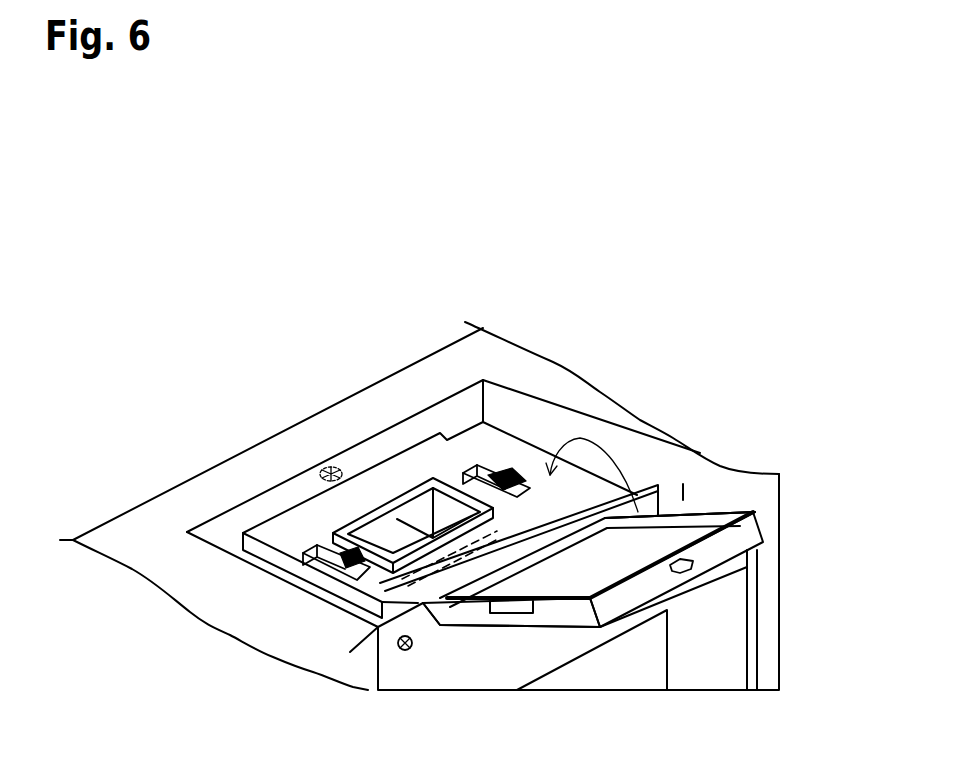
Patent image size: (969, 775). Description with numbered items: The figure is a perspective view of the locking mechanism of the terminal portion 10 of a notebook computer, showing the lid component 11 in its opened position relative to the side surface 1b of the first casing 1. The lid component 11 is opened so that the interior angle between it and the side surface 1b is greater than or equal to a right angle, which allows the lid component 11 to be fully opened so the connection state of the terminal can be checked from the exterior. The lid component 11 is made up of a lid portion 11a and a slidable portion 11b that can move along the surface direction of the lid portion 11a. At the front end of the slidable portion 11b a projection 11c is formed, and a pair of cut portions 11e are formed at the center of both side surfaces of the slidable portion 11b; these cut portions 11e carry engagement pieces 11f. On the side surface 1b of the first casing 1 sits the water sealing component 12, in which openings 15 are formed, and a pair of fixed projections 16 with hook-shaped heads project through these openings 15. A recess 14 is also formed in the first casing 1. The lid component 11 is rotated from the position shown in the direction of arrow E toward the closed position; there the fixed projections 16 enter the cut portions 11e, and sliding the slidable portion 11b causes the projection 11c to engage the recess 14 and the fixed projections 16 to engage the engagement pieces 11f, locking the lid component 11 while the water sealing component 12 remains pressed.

The first casing 1 is at (137, 508).
The side surface 1b is at (498, 355).
The terminal portion 10 is at (555, 287).
The lid component 11 is at (843, 450).
The lid portion 11a is at (720, 517).
The slidable portion 11b is at (757, 522).
The projection 11c is at (693, 560).
The cut portions 11e is at (513, 608).
The engagement pieces 11f is at (485, 607).
The water sealing component 12 is at (425, 458).
The recess 14 is at (318, 466).
The openings 15 is at (313, 550).
The fixed projections 16 is at (337, 557).
The arrow E is at (586, 440).